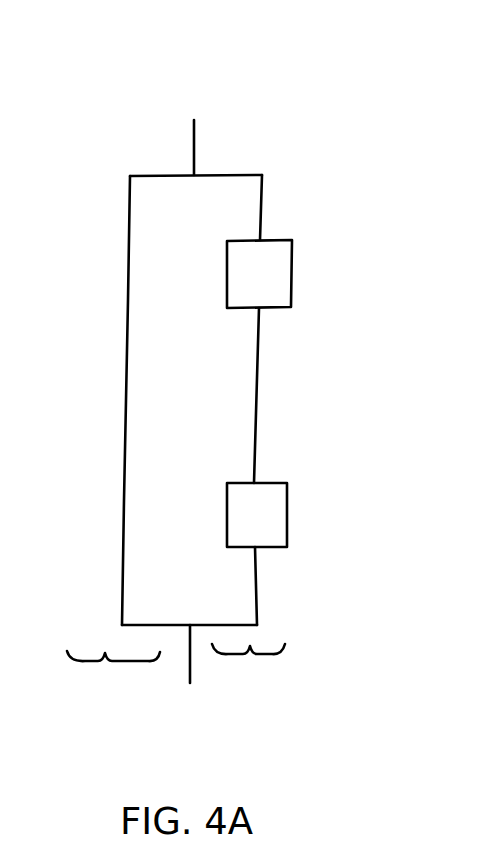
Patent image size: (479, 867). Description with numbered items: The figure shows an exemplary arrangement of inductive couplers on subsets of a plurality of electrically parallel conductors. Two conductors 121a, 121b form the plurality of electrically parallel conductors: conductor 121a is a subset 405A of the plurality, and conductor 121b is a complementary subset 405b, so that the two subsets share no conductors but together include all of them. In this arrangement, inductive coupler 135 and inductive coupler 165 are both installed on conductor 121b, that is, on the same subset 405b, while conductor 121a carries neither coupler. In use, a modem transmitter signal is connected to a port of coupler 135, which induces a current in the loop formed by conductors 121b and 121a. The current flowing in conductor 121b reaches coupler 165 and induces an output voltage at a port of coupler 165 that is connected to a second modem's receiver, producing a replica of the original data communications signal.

The conductor 121a is at (128, 208).
The conductor 121b is at (263, 200).
The inductive coupler 165 is at (272, 270).
The inductive coupler 135 is at (265, 513).
The subset of the plurality of conductors 405A is at (113, 681).
The subset of the plurality of conductors 405b is at (248, 671).